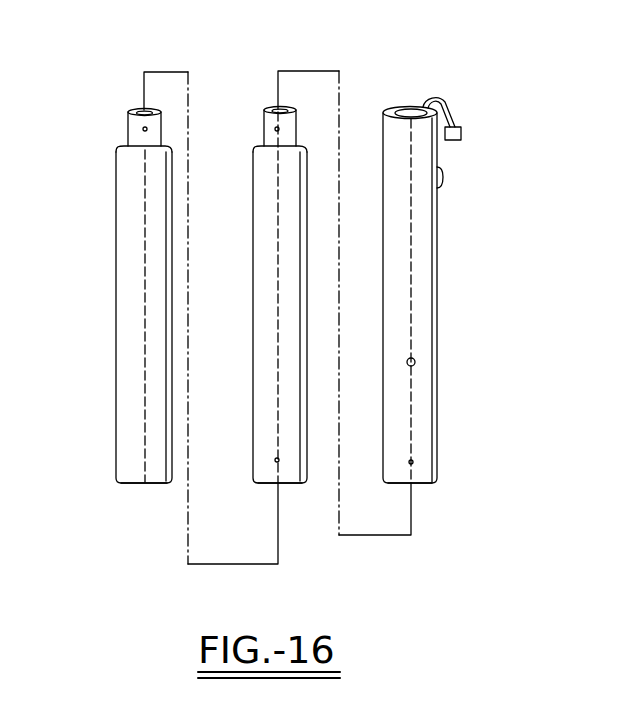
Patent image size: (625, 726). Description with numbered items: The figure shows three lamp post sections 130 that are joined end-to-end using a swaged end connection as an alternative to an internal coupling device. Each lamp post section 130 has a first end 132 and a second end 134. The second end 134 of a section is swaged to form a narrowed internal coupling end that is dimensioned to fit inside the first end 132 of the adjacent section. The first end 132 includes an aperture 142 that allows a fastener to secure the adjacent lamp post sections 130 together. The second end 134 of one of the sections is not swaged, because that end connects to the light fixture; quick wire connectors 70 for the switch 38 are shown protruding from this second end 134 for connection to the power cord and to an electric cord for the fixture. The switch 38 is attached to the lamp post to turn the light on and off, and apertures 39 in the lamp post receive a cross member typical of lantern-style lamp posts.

The lamp post section 130 is at (112, 271).
The first end 132 is at (126, 484).
The second end 134 is at (141, 111).
The aperture 142 is at (142, 129).
The quick wire connectors 70 is at (462, 133).
The switch 38 is at (444, 177).
The apertures 39 is at (416, 362).